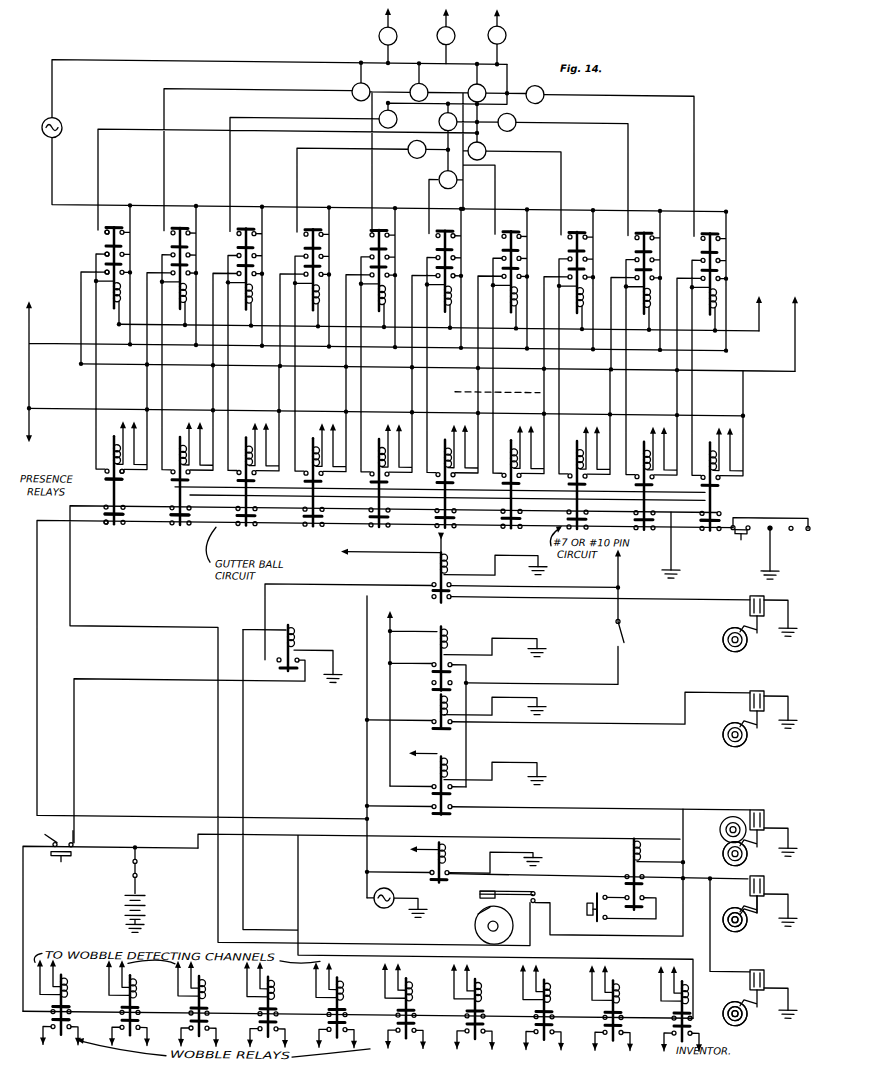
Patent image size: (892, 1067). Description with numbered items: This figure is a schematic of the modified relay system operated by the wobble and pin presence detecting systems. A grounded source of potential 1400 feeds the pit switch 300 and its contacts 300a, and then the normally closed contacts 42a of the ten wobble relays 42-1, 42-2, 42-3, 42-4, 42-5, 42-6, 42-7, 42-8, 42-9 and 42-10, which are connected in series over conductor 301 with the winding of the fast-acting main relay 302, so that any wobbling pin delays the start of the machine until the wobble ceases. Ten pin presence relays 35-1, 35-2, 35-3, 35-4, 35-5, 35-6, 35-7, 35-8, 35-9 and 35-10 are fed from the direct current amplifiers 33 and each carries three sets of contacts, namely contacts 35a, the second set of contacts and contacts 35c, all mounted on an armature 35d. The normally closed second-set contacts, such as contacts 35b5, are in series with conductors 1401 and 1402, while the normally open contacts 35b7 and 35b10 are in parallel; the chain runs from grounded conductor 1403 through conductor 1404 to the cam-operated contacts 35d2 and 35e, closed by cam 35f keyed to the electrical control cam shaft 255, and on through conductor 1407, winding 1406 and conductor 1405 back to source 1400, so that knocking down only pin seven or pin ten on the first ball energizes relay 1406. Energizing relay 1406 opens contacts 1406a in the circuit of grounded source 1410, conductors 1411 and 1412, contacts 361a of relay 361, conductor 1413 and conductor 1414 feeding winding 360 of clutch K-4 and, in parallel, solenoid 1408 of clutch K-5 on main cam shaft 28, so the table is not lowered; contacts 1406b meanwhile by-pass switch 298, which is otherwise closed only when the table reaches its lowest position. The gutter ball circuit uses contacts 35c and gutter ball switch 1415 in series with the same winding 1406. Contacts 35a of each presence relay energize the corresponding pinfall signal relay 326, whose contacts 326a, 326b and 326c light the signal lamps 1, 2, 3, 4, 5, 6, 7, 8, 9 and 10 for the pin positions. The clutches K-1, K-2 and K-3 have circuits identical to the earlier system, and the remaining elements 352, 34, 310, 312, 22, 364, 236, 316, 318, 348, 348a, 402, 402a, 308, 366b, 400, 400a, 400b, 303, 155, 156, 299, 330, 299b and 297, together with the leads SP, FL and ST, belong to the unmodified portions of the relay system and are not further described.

The pinfall signalling light 1 is at (448, 180).
The pinfall signalling light 2 is at (417, 149).
The pinfall signalling light 3 is at (477, 151).
The pinfall signalling light 4 is at (388, 119).
The pinfall signalling light 5 is at (448, 122).
The pinfall signalling light 6 is at (507, 122).
The pinfall signalling light 7 is at (361, 92).
The pinfall signalling light 8 is at (419, 92).
The pinfall signalling light 9 is at (477, 93).
The pinfall signalling light 10 is at (535, 95).
The spare terminal SP is at (388, 15).
The foul terminal FL is at (497, 13).
The strike terminal ST is at (497, 12).
The pinfall signal relay 326 is at (108, 290).
The relay contacts 326a is at (104, 231).
The relay contacts 326b is at (104, 253).
The relay contacts 326c is at (104, 271).
The power bus 299 is at (70, 336).
The bus line 330 is at (794, 358).
The pin presence relay 35-1 is at (442, 443).
The pin presence relay 35-2 is at (310, 443).
The pin presence relay 35-3 is at (574, 443).
The pin presence relay 35-4 is at (243, 443).
The pin presence relay 35-5 is at (111, 443).
The pin presence relay 35-6 is at (641, 443).
The pin presence relay 35-7 is at (177, 443).
The pin presence relay 35-8 is at (376, 443).
The pin presence relay 35-9 is at (508, 443).
The pin presence relay 35-10 is at (707, 443).
The presence relay contacts 35a is at (120, 472).
The presence relay contacts 35b5 is at (122, 512).
The presence relay contacts 35b7 is at (190, 506).
The presence relay contacts 35b10 is at (719, 518).
The presence relay contacts 35c is at (117, 524).
The relay armature 35d is at (190, 480).
The cam-operated contact 35d2 is at (478, 890).
The cam-operated contact 35e is at (484, 887).
The cam 35f is at (476, 912).
The direct current amplifier 33 is at (660, 426).
The conductor 1401 is at (718, 500).
The conductor 1402 is at (652, 496).
The grounded conductor 1403 is at (671, 543).
The conductor 1404 is at (530, 940).
The conductor 1405 is at (532, 900).
The relay winding 1406 is at (640, 838).
The relay contacts 1406a is at (644, 871).
The relay contacts 1406b is at (644, 891).
The conductor 1407 is at (634, 930).
The solenoid winding 1408 is at (765, 974).
The grounded source 1410 is at (367, 894).
The conductor 1411 is at (367, 874).
The conductor 1412 is at (390, 886).
The conductor 1413 is at (533, 852).
The conductor 1414 is at (688, 870).
The gutter ball switch 1415 is at (733, 527).
The gutter ball relay 348 is at (448, 552).
The gutter ball relay contact 348a is at (452, 596).
The main relay 302 is at (296, 624).
The relay 402 is at (447, 628).
The relay contact 402a is at (466, 684).
The relay 308 is at (437, 706).
The contact 366b is at (430, 742).
The relay 400 is at (437, 765).
The relay contact 400a is at (452, 806).
The relay contact 400b is at (452, 786).
The solenoid 352 is at (765, 588).
The cam wheel 34 is at (722, 632).
The clutch K-2 is at (744, 642).
The wire 310 is at (698, 685).
The solenoid 312 is at (765, 682).
The cam wheel 22 is at (722, 728).
The clutch K-1 is at (768, 713).
The solenoid 364 is at (765, 810).
The cam wheel 236 is at (724, 830).
The clutch K-3 is at (729, 808).
The clutch relay winding 360 is at (765, 877).
The lever 316 is at (742, 898).
The wheel 318 is at (740, 906).
The clutch K-4 is at (746, 955).
The main cam shaft 28 is at (740, 1014).
The clutch K-5 is at (757, 957).
The pit switch 300 is at (64, 860).
The pit switch contacts 300a is at (53, 840).
The conductor 301 is at (336, 940).
The wire 303 is at (140, 846).
The source of potential 1400 is at (148, 899).
The wire 155 is at (23, 929).
The wire 156 is at (96, 1013).
The wobble relay 42-1 is at (69, 997).
The wobble relay 42-2 is at (138, 997).
The wobble relay 42-3 is at (207, 997).
The wobble relay 42-4 is at (276, 997).
The wobble relay 42-5 is at (345, 997).
The wobble relay 42-6 is at (414, 997).
The wobble relay 42-7 is at (483, 997).
The wobble relay 42-8 is at (552, 997).
The wobble relay 42-9 is at (621, 997).
The wobble relay 42-10 is at (690, 997).
The wobble relay contacts 42a is at (50, 1028).
The relay 361 is at (447, 846).
The relay contacts 361a is at (430, 866).
The electrical control cam shaft 255 is at (485, 922).
The switch 298 is at (592, 897).
The switch contact 299b is at (608, 914).
The switch contact 297 is at (592, 912).